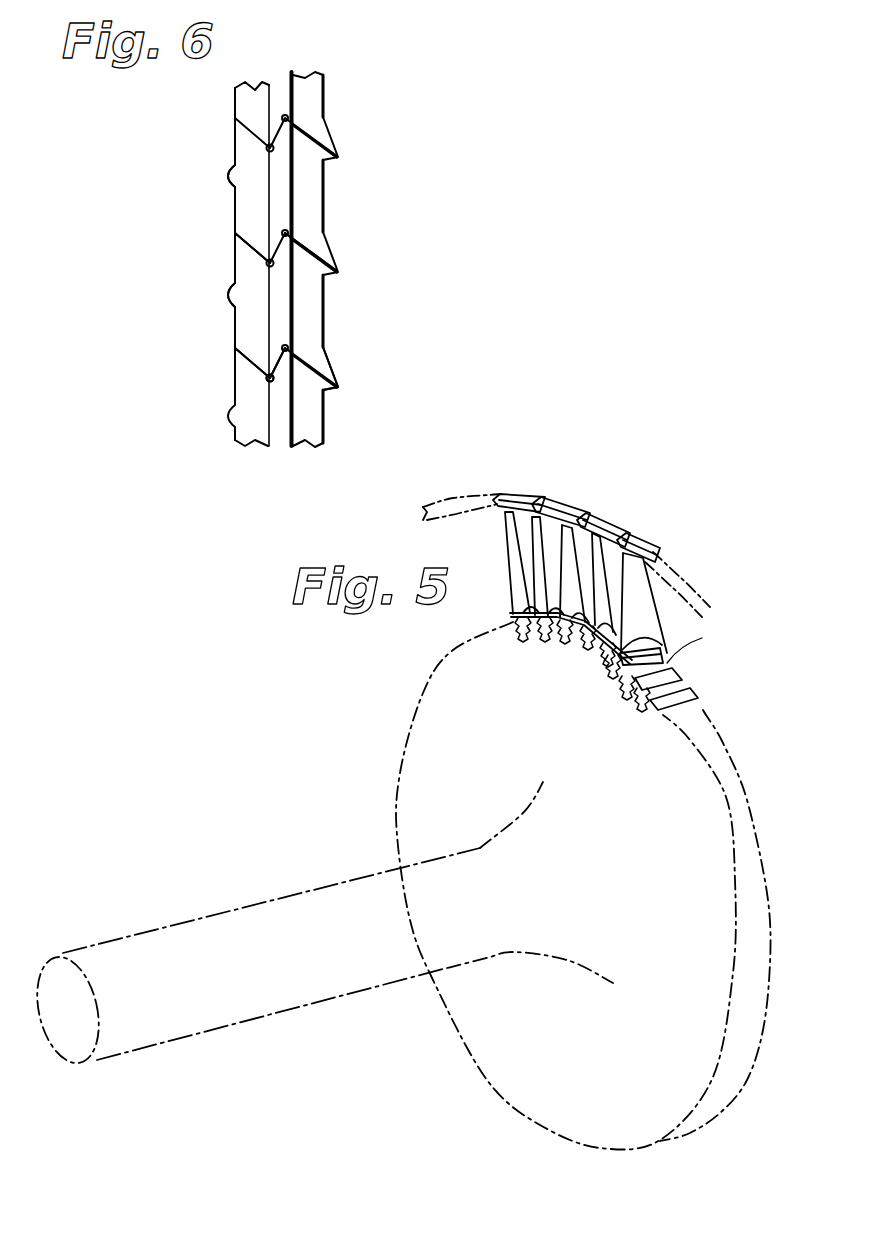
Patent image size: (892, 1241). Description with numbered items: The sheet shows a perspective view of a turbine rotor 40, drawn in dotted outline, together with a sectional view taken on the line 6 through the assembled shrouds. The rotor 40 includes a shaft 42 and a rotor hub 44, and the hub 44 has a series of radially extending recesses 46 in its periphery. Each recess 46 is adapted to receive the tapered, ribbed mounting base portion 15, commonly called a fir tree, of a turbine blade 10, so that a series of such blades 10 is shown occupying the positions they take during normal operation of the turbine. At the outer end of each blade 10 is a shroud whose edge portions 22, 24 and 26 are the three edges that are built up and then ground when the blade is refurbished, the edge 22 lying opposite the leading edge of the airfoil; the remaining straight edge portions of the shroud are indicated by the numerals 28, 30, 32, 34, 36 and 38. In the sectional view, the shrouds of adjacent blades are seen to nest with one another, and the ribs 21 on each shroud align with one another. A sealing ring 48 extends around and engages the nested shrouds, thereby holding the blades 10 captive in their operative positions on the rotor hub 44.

In FIG. 5, the section line 6— 6 is at (530, 450).
In FIG. 6, the turbine blade 10 is at (206, 182).
In FIG. 5, the turbine blade 10 is at (605, 557).
In FIG. 5, the mounting base portion 15 is at (603, 660).
In FIG. 6, the ribs 21 is at (280, 197).
In FIG. 6, the edge portion 22 is at (329, 329).
In FIG. 6, the edge portion 24 is at (258, 365).
In FIG. 6, the edge portion 26 is at (314, 362).
In FIG. 6, the straight edge portion 28 is at (267, 367).
In FIG. 6, the straight edge portion 30 is at (309, 250).
In FIG. 6, the straight edge portion 32 is at (280, 248).
In FIG. 6, the straight edge portion 34 is at (247, 243).
In FIG. 6, the straight edge portion 36 is at (233, 263).
In FIG. 6, the straight edge portion 38 is at (235, 326).
In FIG. 5, the turbine rotor 40 is at (505, 1117).
In FIG. 5, the shaft 42 is at (300, 997).
In FIG. 5, the rotor hub 44 is at (690, 838).
In FIG. 5, the radially extending recesses 46 is at (693, 697).
In FIG. 5, the sealing ring 48 is at (560, 530).